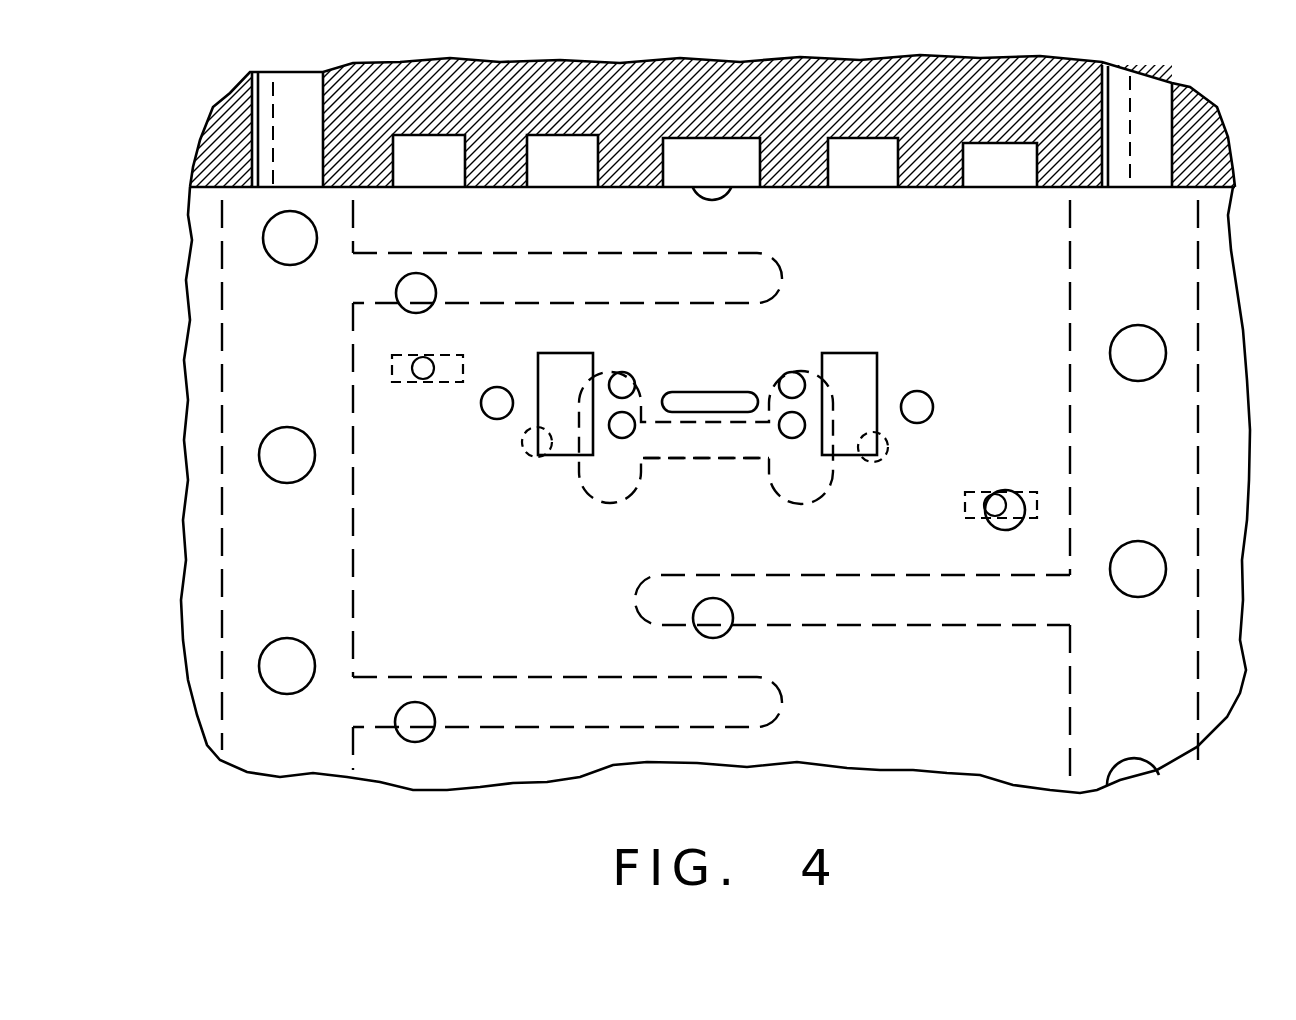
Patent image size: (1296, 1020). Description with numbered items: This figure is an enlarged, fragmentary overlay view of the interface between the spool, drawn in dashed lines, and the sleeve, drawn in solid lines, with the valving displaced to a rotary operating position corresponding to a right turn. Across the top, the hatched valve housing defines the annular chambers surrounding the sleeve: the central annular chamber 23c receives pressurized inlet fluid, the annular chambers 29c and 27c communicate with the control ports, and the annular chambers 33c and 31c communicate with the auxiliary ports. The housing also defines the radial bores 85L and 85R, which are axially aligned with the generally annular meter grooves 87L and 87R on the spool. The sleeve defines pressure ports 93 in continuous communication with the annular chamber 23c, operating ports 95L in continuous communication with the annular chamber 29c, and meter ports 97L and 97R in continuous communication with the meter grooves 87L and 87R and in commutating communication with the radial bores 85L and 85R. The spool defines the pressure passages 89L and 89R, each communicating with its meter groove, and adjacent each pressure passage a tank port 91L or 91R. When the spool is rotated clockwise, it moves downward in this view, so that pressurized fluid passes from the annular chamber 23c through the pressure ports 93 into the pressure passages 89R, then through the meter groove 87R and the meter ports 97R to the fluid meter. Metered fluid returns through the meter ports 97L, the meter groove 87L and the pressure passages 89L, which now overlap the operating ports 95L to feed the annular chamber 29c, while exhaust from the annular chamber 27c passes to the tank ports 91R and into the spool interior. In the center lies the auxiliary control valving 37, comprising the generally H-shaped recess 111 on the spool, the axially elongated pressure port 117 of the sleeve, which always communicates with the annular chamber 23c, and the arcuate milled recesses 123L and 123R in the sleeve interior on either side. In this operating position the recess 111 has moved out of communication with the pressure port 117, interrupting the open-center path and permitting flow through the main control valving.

The radial bore 85L is at (272, 123).
The radial bore 85R is at (1148, 113).
The annular chamber 29c is at (438, 148).
The annular chamber 33c is at (585, 148).
The annular chamber 23c is at (727, 153).
The annular chamber 31c is at (880, 155).
The annular chamber 27c is at (1012, 160).
The pressure port 93 is at (705, 203).
The operating port 95L is at (407, 287).
The pressure passage 89L is at (770, 292).
The pressure passage 89R is at (848, 600).
The meter groove 87L is at (298, 547).
The meter groove 87R is at (1125, 236).
The meter port 97L is at (300, 447).
The meter port 97R is at (1128, 362).
The tank port 91L is at (420, 386).
The tank port 91R is at (990, 495).
The arcuate milled recess 123L is at (575, 360).
The arcuate milled recess 123R is at (849, 360).
The pressure port 117 is at (712, 400).
The H-shaped recess 111 is at (680, 443).
The auxiliary control valving 37 is at (648, 527).